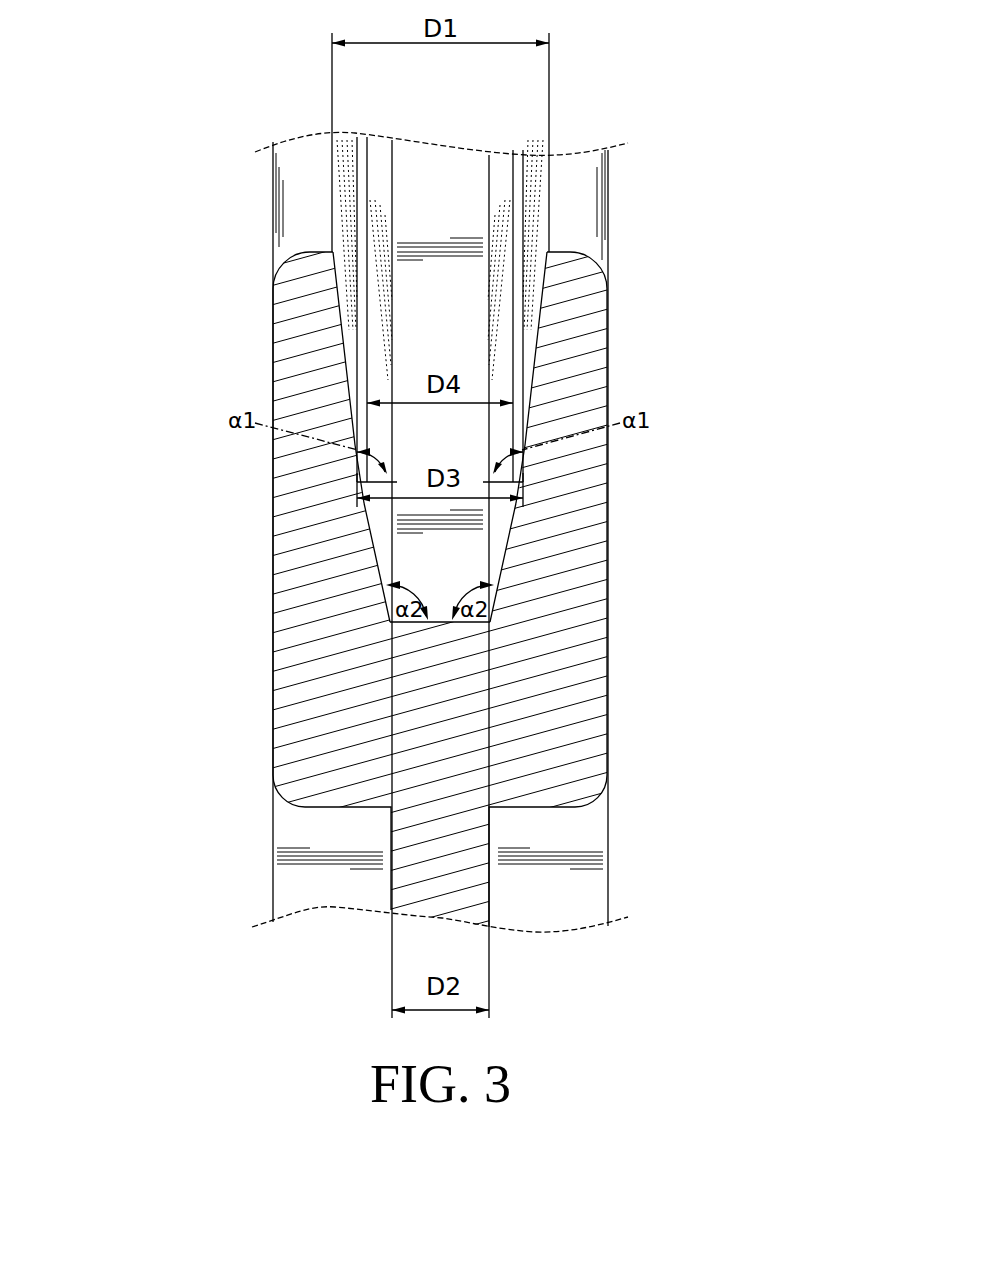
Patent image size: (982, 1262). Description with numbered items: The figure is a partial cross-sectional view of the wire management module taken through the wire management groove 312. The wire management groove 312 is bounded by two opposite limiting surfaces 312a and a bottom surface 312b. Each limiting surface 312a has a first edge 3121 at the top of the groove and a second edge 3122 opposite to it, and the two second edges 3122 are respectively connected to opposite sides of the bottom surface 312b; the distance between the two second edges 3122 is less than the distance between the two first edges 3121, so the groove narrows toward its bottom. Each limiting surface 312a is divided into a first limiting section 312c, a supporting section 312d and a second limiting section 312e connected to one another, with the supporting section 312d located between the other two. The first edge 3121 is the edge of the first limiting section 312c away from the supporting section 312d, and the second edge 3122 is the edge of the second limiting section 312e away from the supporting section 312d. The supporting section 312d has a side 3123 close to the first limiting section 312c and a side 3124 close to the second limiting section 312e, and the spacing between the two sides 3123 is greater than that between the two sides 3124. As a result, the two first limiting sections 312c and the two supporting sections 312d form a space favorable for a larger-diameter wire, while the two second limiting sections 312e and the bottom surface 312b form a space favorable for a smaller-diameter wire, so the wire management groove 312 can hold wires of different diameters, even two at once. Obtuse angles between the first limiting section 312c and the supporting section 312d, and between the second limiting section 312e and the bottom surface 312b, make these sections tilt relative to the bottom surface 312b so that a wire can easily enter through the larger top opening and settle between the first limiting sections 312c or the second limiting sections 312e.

The wire management groove 312 is at (112, 85).
The first edge 3121 is at (338, 241).
The second edge 3122 is at (390, 624).
The side of the supporting section close to the first limiting section 3123 is at (360, 487).
The side of the supporting section close to the second limiting section 3124 is at (365, 447).
The limiting surface 312a is at (150, 330).
The bottom surface 312b is at (440, 620).
The first limiting section 312c is at (352, 340).
The supporting section 312d is at (385, 478).
The second limiting section 312e is at (385, 520).